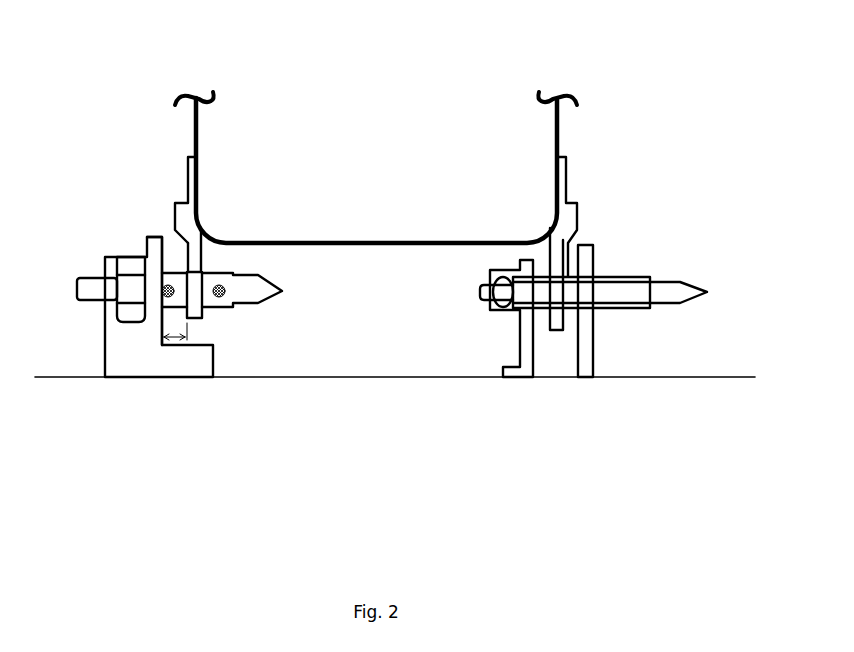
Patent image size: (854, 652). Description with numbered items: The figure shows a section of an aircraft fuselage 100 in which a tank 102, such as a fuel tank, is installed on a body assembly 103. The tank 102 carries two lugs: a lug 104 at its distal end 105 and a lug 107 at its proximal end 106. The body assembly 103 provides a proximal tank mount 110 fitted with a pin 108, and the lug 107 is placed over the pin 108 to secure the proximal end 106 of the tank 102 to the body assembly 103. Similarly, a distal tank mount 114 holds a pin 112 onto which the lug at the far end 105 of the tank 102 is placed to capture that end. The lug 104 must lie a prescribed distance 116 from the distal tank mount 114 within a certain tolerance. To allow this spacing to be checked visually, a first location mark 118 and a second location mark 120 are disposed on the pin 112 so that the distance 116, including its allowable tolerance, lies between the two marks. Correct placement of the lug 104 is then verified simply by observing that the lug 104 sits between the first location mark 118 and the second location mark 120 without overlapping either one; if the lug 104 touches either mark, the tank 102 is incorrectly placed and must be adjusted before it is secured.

The fuselage 100 is at (341, 23).
The tank 102 is at (305, 240).
The body assembly 103 is at (415, 378).
The lug 104 is at (187, 165).
The distal end 105 is at (193, 123).
The proximal end 106 is at (560, 122).
The lug 107 is at (567, 181).
The pin 108 is at (632, 309).
The proximal tank mount 110 is at (519, 345).
The pin 112 is at (251, 305).
The distal tank mount 114 is at (105, 352).
The prescribed distance 116 is at (178, 340).
The first location mark 118 is at (220, 298).
The second location mark 120 is at (169, 284).